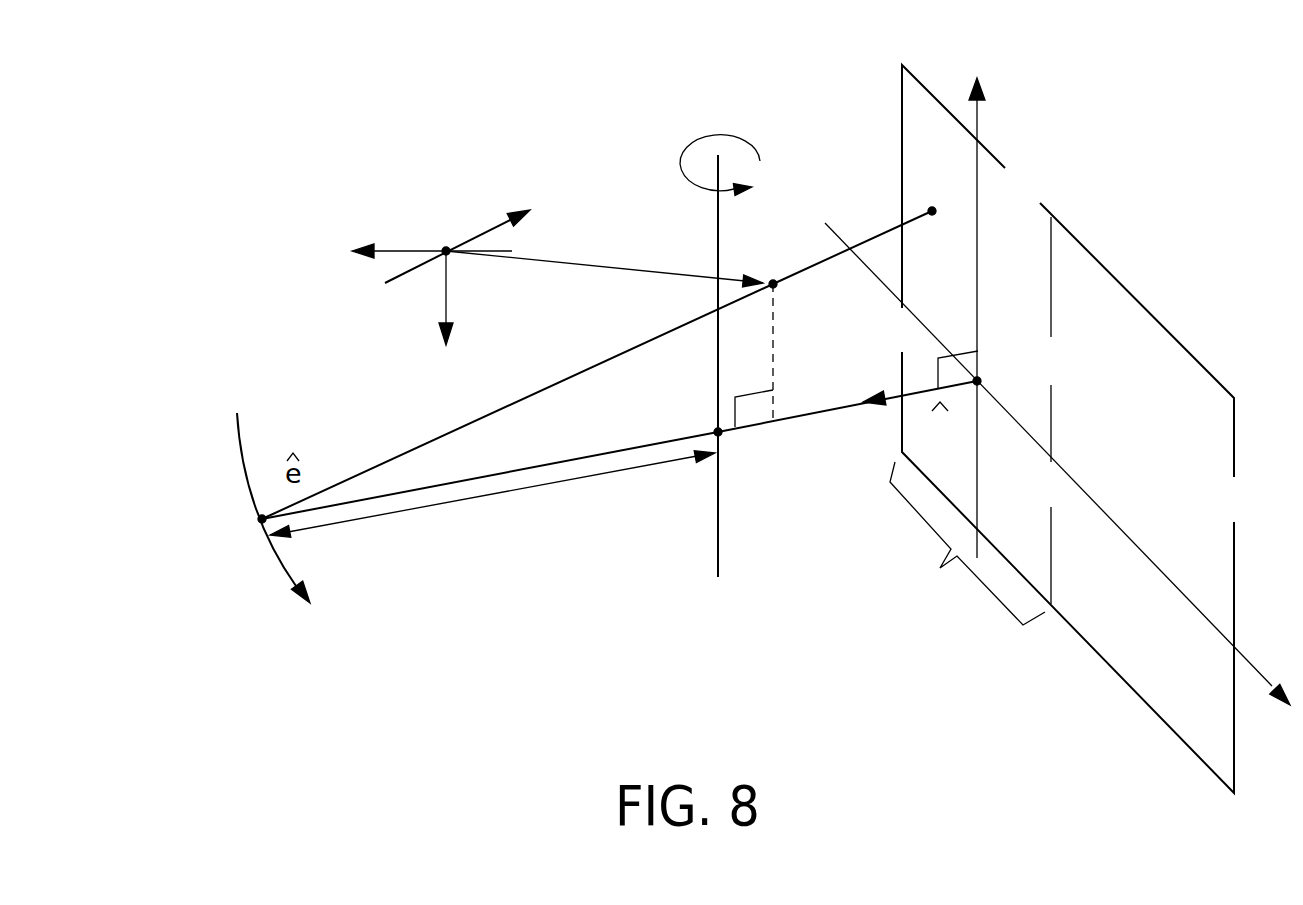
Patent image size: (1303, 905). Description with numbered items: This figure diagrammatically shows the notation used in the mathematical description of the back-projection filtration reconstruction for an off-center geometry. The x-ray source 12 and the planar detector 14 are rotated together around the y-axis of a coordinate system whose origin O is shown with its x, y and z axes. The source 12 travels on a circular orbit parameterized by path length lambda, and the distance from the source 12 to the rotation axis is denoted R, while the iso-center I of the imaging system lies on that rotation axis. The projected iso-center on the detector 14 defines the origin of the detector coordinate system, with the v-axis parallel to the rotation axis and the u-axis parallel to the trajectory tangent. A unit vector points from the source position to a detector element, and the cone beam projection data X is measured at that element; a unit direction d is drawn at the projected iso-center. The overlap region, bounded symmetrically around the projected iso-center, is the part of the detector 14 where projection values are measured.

The x-ray source 12 is at (262, 519).
The planar detector 14 is at (1190, 352).
The overlap region O is at (441, 257).
The cone beam projection data X is at (611, 328).
The iso-center I is at (726, 356).
The unit direction vector d is at (922, 394).
The source-to-rotation-axis distance R is at (492, 498).